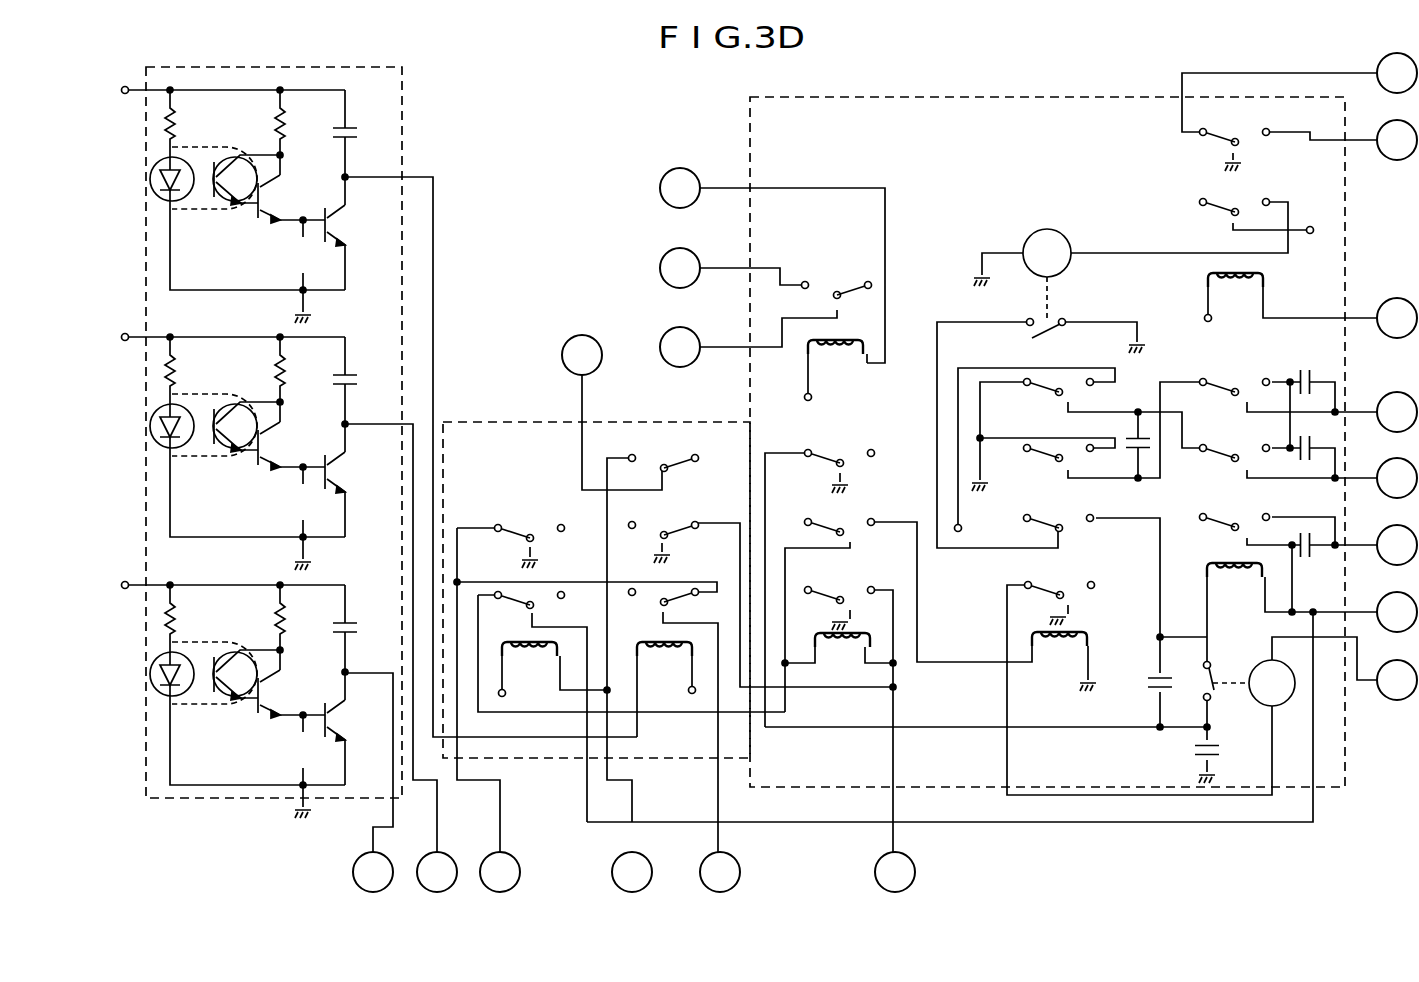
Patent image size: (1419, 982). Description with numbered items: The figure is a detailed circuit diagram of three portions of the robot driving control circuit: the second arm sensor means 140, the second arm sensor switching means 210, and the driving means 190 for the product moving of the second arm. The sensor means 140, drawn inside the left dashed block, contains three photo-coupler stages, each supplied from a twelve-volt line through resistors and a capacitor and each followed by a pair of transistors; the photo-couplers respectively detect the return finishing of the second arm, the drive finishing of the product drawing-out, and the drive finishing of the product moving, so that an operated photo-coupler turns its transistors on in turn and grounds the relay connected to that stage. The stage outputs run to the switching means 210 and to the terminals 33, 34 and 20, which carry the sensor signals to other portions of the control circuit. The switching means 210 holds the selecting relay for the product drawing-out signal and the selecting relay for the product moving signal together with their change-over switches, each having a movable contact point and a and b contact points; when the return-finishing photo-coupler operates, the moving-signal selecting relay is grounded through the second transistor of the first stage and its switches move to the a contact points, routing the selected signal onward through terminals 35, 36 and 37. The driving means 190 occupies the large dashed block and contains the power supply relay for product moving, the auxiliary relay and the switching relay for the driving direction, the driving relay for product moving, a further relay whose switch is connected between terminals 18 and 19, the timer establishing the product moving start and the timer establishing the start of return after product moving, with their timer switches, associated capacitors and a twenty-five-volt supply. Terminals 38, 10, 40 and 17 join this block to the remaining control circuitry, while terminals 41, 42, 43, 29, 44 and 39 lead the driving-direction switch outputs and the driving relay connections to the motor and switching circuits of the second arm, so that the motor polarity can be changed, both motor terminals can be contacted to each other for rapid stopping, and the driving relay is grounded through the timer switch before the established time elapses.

The second arm sensor means 140 is at (403, 141).
The driving means for the product moving of second arm 190 is at (748, 117).
The second arm sensor switching means 210 is at (458, 422).
The terminal 10 is at (1397, 73).
The terminal 40 is at (1397, 140).
The terminal 17 is at (1397, 318).
The terminal 41 is at (1397, 412).
The terminal 42 is at (1397, 478).
The terminal 43 is at (1397, 545).
The terminal 29 is at (1397, 612).
The terminal 44 is at (1397, 680).
The terminal 38 is at (680, 188).
The terminal 18 is at (680, 268).
The terminal 19 is at (680, 347).
The terminal 35 is at (582, 355).
The terminal 33 is at (373, 872).
The terminal 34 is at (437, 872).
The terminal 20 is at (500, 872).
The terminal 36 is at (632, 872).
The terminal 37 is at (720, 872).
The terminal 39 is at (895, 872).